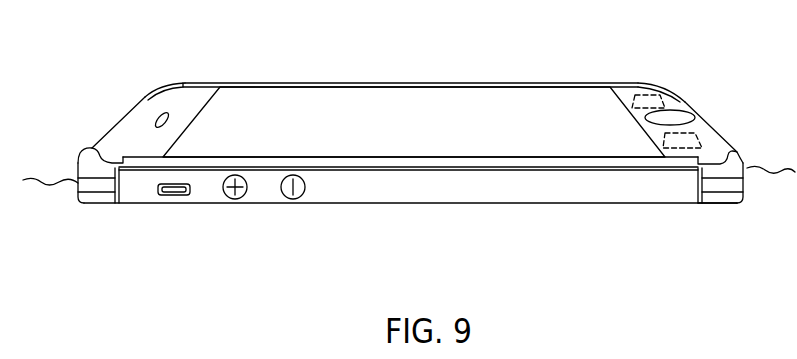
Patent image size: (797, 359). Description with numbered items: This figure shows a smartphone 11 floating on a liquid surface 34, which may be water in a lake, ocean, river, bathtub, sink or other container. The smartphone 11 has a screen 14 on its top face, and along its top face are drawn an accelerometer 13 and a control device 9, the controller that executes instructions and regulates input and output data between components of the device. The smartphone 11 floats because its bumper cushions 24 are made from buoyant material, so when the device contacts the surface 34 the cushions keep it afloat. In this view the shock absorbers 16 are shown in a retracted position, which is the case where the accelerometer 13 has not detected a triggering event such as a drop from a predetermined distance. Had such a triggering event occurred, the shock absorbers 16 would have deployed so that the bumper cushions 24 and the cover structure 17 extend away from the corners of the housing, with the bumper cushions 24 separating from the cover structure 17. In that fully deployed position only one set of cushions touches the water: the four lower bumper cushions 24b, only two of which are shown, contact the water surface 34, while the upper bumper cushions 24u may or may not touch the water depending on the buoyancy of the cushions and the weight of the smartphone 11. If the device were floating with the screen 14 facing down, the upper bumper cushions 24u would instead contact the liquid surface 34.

The smartphone 11 is at (548, 62).
The screen 14 is at (411, 94).
The accelerometer 13 is at (665, 101).
The control device 9 is at (699, 134).
The upper bumper cushions 24u is at (163, 87).
The lower bumper cushions 24b is at (108, 205).
The bumper cushions 24 is at (747, 162).
The cover structure 17 is at (92, 185).
The liquid surface 34 is at (48, 172).
The shock absorbers 16 is at (710, 234).